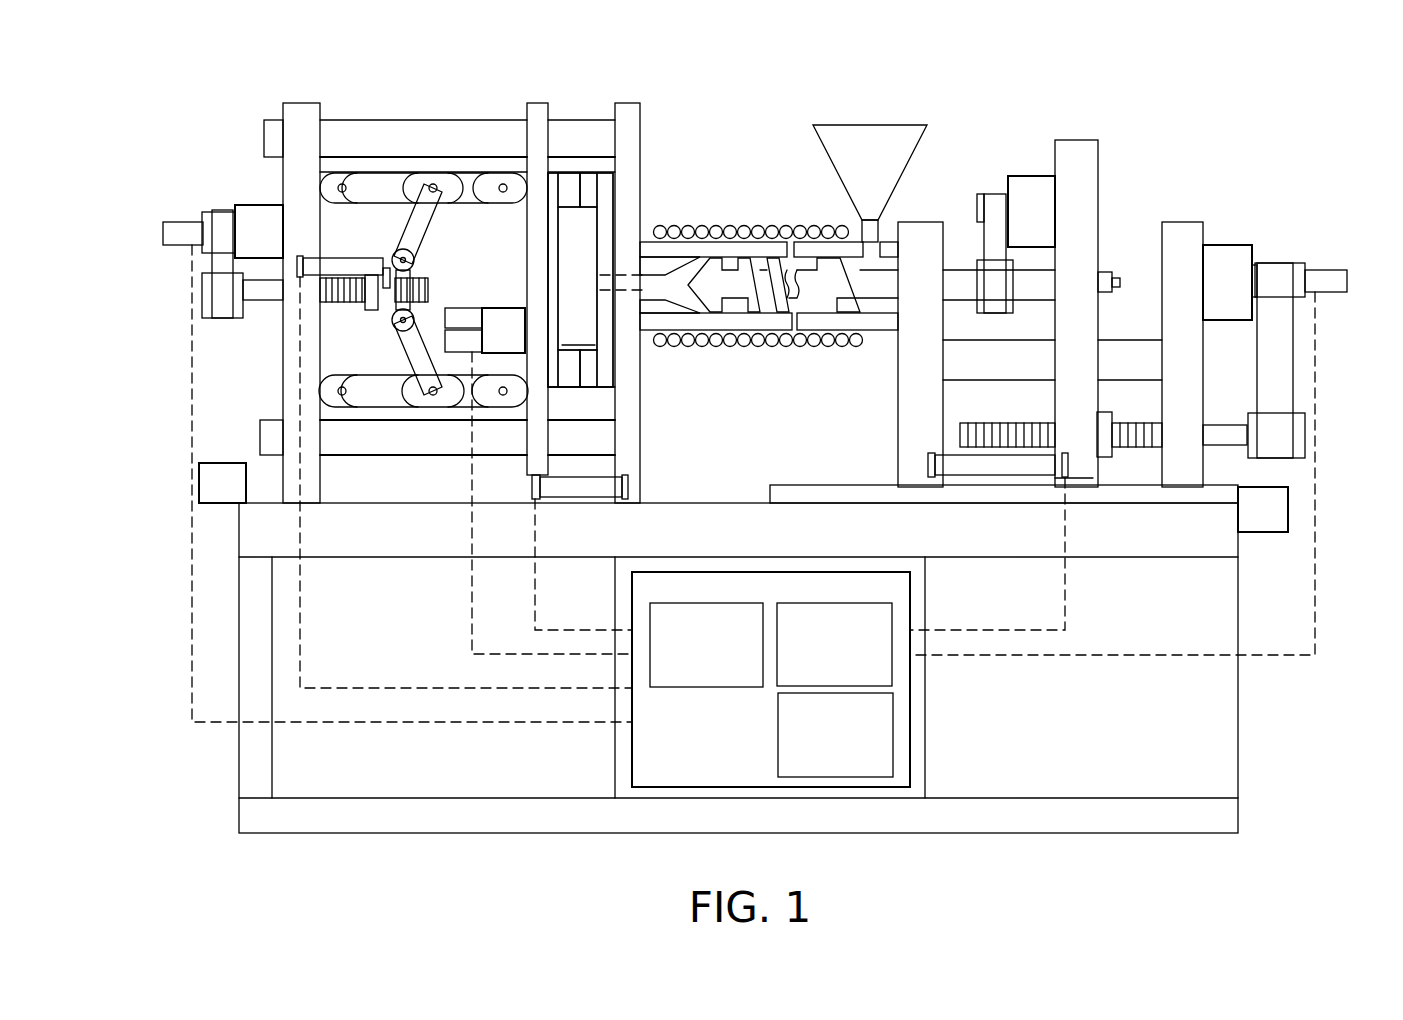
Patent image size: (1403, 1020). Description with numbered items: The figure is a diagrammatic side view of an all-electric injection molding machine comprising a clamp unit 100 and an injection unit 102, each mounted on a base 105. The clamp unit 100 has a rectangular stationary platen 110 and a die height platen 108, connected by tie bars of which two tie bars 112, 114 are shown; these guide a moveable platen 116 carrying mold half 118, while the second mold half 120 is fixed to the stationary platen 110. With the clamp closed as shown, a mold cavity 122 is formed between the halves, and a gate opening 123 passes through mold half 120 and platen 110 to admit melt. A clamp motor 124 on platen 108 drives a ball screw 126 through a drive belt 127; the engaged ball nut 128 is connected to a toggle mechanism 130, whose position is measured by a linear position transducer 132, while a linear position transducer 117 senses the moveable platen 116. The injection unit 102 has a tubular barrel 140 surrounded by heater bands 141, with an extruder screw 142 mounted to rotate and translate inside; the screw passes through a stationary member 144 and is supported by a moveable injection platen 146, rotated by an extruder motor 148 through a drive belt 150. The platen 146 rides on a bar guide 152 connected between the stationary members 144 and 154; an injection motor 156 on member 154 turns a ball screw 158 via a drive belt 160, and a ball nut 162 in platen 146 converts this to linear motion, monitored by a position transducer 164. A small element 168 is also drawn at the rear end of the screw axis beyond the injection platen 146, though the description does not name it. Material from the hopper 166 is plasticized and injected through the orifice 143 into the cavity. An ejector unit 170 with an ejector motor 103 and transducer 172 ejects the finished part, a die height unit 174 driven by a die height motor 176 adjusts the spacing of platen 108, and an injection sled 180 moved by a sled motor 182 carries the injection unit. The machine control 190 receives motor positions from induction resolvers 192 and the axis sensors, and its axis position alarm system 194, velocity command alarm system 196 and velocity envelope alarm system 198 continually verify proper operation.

The clamp unit 100 is at (344, 105).
The injection unit 102 is at (1114, 181).
The ejector motor 103 is at (511, 300).
The base 105 is at (660, 503).
The die height platen 108 is at (297, 103).
The stationary platen 110 is at (625, 103).
The tie bar 112 is at (456, 126).
The tie bar 114 is at (372, 456).
The moveable platen 116 is at (535, 103).
The linear position transducer 117 is at (572, 497).
The mold half 118 is at (595, 231).
The second mold half 120 is at (577, 278).
The mold cavity 122 is at (578, 332).
The gate opening 123 is at (600, 283).
The clamp motor 124 is at (264, 205).
The ball screw 126 is at (413, 254).
The drive belt 127 is at (212, 262).
The ball nut 128 is at (372, 310).
The toggle mechanism 130 is at (452, 173).
The linear position transducer 132 is at (312, 300).
The barrel 140 is at (882, 336).
The heater bands 141 is at (756, 244).
The extruder screw 142 is at (700, 322).
The orifice 143 is at (690, 274).
The stationary member 144 is at (898, 394).
The moveable injection platen 146 is at (1073, 140).
The extruder motor 148 is at (1040, 176).
The drive belt 150 is at (984, 226).
The bar guide 152 is at (1033, 364).
The stationary member 154 is at (1203, 368).
The injection motor 156 is at (1220, 245).
The ball screw 158 is at (1215, 425).
The drive belt 160 is at (1294, 372).
The ball nut 162 is at (1098, 416).
The position transducer 164 is at (1023, 478).
The hopper 166 is at (835, 125).
The position encoder 168 is at (1120, 282).
The ejector unit 170 is at (509, 256).
The transducer 172 is at (480, 308).
The die height unit 174 is at (205, 462).
The die height motor 176 is at (240, 505).
The injection sled 180 is at (790, 485).
The sled motor 182 is at (1250, 532).
The machine control 190 is at (816, 679).
The induction resolvers 192 is at (190, 222).
The axis position alarm system 194 is at (718, 687).
The velocity command alarm system 196 is at (892, 625).
The velocity envelope alarm system 198 is at (778, 735).